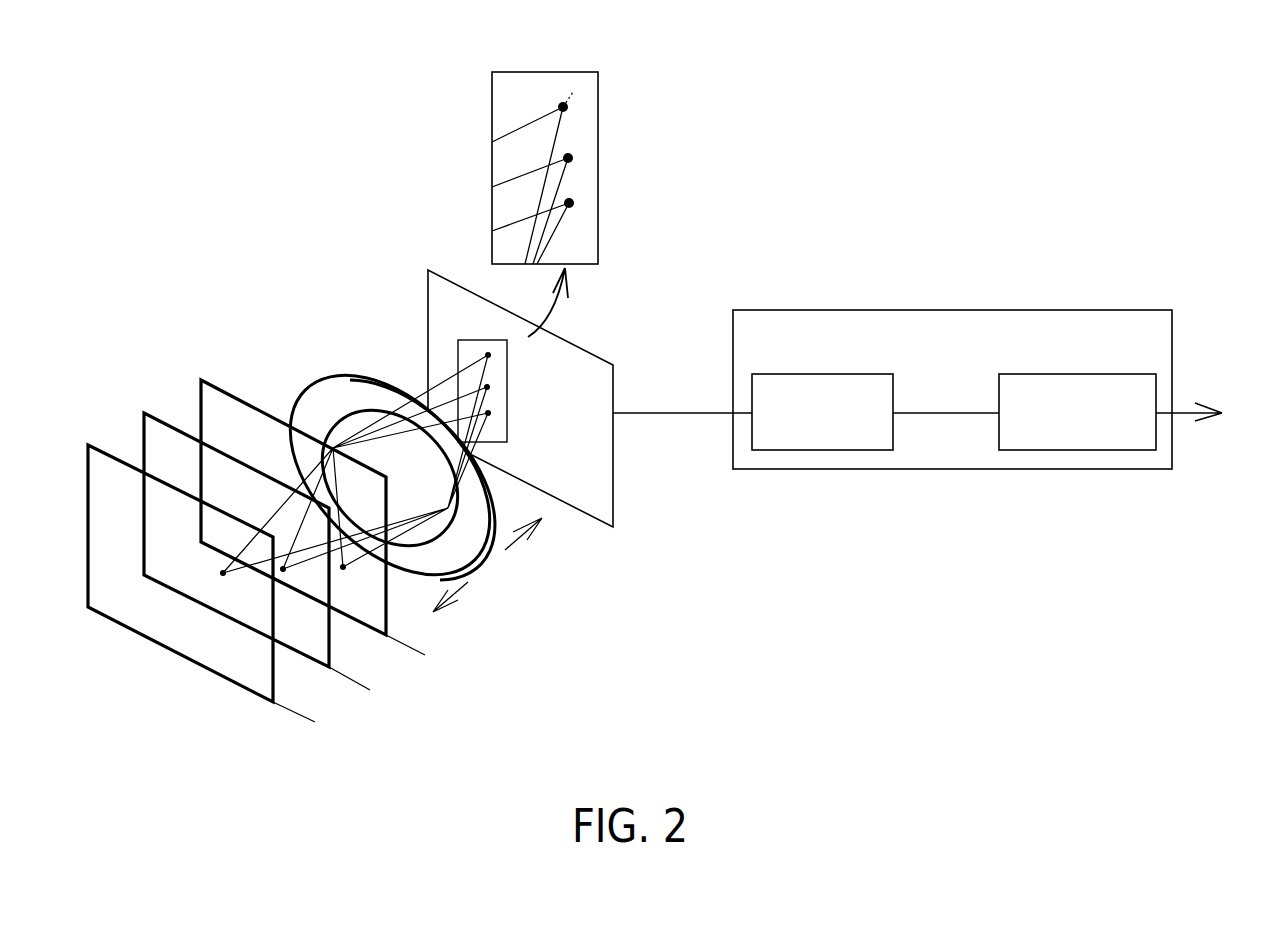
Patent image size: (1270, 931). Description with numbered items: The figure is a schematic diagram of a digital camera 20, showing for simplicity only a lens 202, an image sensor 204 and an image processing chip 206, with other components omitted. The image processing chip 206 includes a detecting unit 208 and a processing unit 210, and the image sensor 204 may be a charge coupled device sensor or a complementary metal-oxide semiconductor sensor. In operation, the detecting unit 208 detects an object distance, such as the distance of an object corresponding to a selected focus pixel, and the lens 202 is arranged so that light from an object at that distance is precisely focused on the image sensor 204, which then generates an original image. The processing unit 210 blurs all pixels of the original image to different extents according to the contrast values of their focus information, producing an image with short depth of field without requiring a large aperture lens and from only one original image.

The digital camera 20 is at (1018, 128).
The lens 202 is at (465, 550).
The image sensor 204 is at (613, 507).
The image processing chip 206 is at (958, 310).
The detecting unit 208 is at (821, 450).
The processing unit 210 is at (1065, 451).